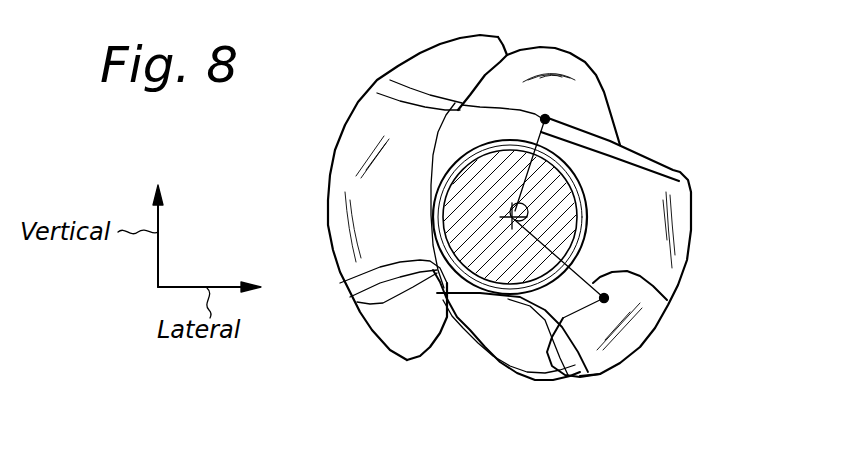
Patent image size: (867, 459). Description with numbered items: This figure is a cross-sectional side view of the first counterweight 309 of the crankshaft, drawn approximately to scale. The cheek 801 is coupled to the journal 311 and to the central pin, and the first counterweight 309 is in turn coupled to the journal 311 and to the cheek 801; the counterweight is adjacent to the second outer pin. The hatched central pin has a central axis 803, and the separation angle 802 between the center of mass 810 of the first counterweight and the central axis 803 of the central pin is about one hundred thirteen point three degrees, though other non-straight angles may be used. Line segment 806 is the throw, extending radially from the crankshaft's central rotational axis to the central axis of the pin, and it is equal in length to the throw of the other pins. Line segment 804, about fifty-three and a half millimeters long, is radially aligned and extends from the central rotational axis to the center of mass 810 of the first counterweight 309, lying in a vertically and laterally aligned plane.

The cheek 801 is at (598, 103).
The separation angle 802 is at (524, 203).
The central axis of the central pin 803 is at (518, 88).
The line segment 804 is at (660, 292).
The line segment 806 is at (513, 190).
The center of mass of the first counterweight 810 is at (557, 373).
The first counterweight 309 is at (670, 170).
The journal 311 is at (466, 320).